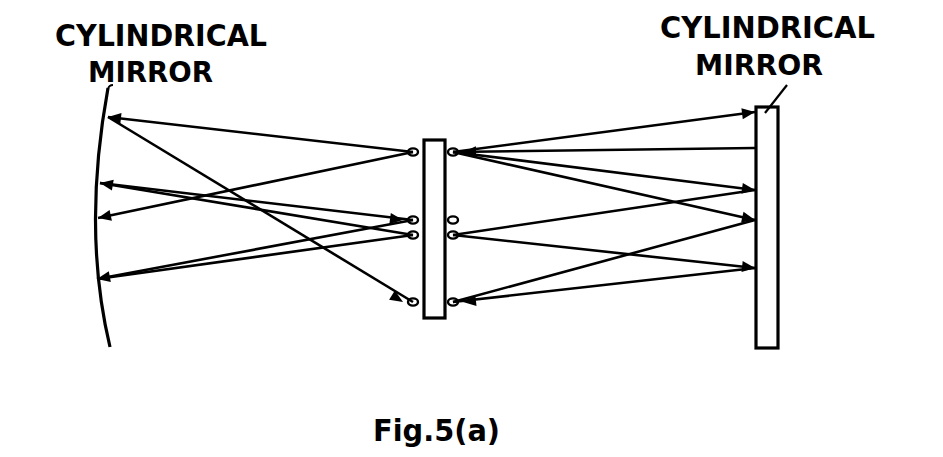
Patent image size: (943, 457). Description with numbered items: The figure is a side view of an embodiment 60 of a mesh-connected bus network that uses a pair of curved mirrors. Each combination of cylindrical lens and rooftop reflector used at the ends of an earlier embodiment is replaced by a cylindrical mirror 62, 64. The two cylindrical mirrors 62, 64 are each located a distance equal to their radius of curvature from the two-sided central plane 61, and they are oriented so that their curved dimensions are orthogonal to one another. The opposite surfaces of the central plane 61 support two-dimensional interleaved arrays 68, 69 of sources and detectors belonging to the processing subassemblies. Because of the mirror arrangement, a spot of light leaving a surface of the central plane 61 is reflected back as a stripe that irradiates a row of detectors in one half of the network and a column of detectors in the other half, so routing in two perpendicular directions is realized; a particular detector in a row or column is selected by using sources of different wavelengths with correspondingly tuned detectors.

The embodiment 60 is at (631, 401).
The central plane 61 is at (430, 313).
The cylindrical mirror 62 is at (772, 173).
The cylindrical mirror 64 is at (105, 338).
The two-dimensional interleaved array of sources and detectors 68 is at (458, 142).
The two-dimensional interleaved array of sources and detectors 69 is at (410, 137).